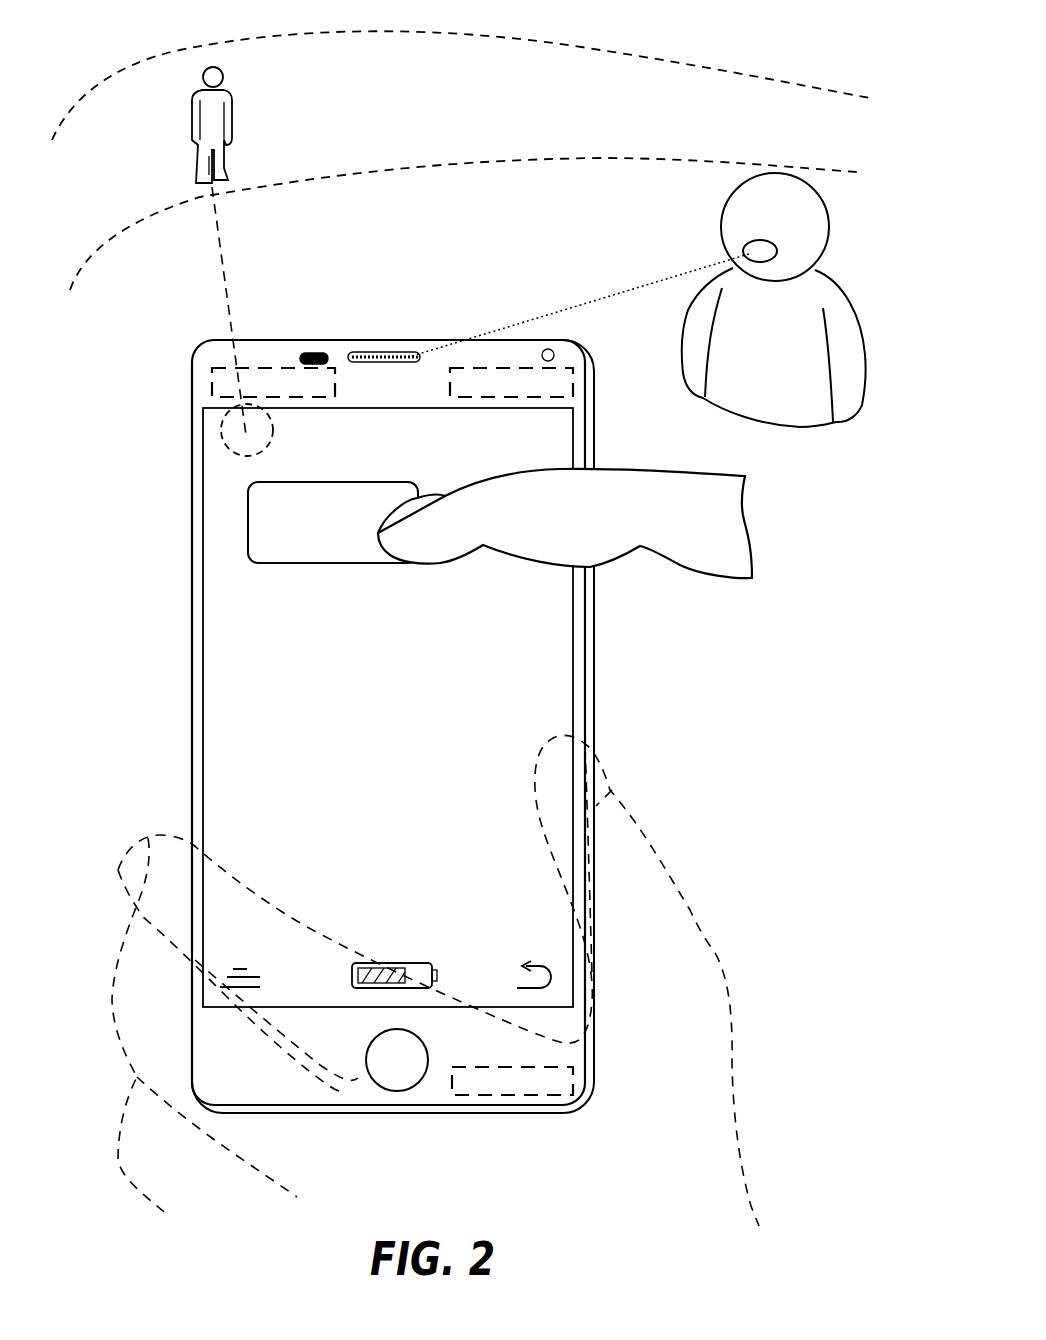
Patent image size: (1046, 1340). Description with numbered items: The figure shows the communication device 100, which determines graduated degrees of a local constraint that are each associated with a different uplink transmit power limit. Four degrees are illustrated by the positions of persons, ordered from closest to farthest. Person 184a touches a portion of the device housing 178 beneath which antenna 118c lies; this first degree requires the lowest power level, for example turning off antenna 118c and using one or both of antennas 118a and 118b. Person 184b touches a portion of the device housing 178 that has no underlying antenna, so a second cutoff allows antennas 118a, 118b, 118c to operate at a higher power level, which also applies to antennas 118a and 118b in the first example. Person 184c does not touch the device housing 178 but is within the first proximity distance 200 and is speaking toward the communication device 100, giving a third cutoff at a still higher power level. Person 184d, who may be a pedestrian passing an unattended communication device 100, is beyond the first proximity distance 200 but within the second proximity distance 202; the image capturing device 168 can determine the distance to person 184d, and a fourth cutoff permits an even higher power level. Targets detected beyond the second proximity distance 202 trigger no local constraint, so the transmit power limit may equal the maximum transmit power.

The communication device 100 is at (188, 356).
The antenna 118a is at (266, 370).
The antenna 118b is at (575, 385).
The antenna 118c is at (569, 1066).
The image capturing device 168 is at (380, 357).
The device housing 178 is at (590, 1108).
The person 184a is at (685, 905).
The person 184b is at (680, 575).
The person 184c is at (805, 428).
The person 184d is at (231, 103).
The first proximity distance 200 is at (440, 165).
The second proximity distance 202 is at (700, 65).